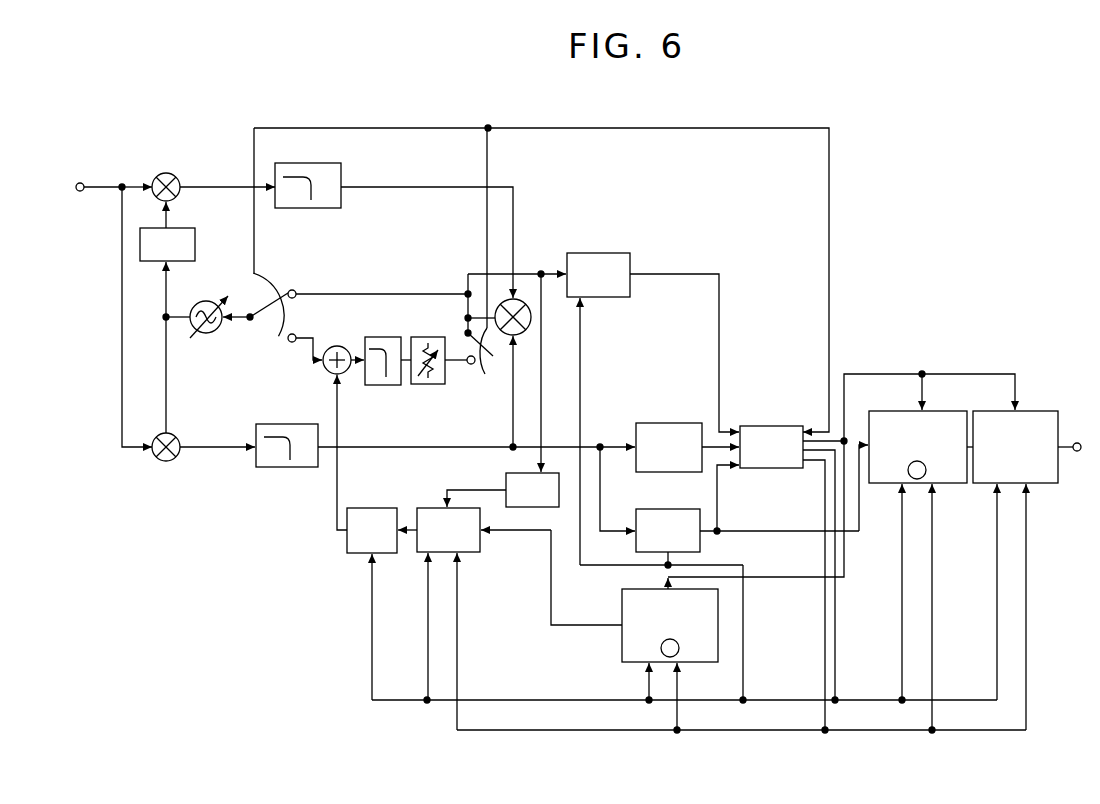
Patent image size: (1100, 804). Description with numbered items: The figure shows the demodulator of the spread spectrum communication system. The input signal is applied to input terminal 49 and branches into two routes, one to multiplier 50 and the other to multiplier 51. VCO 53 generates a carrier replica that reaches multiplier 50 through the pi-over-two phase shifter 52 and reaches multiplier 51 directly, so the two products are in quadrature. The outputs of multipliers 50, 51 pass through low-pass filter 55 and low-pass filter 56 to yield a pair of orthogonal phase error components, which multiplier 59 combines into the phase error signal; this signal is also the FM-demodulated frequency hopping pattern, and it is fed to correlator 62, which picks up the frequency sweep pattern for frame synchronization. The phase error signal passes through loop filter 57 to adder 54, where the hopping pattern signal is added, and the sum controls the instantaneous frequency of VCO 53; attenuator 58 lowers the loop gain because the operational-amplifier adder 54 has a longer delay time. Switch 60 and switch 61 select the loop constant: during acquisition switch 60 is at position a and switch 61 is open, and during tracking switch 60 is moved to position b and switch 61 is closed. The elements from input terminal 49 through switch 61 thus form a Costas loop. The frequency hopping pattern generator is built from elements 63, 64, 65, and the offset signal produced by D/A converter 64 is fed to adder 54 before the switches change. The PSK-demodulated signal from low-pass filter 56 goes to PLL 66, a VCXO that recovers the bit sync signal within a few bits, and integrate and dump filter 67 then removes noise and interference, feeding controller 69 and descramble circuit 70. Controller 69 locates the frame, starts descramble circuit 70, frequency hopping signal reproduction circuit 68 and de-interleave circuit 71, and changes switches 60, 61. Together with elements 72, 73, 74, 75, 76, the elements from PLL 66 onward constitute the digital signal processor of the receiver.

The input terminal 49 is at (83, 184).
The multiplier 50 is at (177, 178).
The multiplier 51 is at (166, 461).
The π/2-phase shifter 52 is at (195, 246).
The VCO 53 is at (205, 301).
The adder 54 is at (338, 346).
The low-pass filter 55 is at (341, 172).
The low-pass filter 56 is at (290, 467).
The loop filter 57 is at (383, 385).
The attenuator 58 is at (427, 384).
The multiplier 59 is at (528, 329).
The switch 60 is at (281, 284).
The switch 61 is at (484, 368).
The correlator 62 is at (605, 253).
The frequency hopping pattern generator element 63 is at (363, 508).
The D/A converter 64 is at (423, 508).
The frequency hopping pattern generator element 65 is at (506, 478).
The PLL 66 is at (668, 423).
The integrate and dump filter 67 is at (690, 509).
The frequency hopping signal reproduction circuit 68 is at (622, 652).
The controller 69 is at (768, 426).
The descramble circuit 70 is at (948, 411).
The de-interleave circuit 71 is at (1042, 411).
The digital signal processor element 72 is at (785, 577).
The digital signal processor element 73 is at (865, 730).
The digital signal processor element 74 is at (865, 700).
The digital signal processor element 75 is at (775, 128).
The digital signal processor element 76 is at (1079, 452).